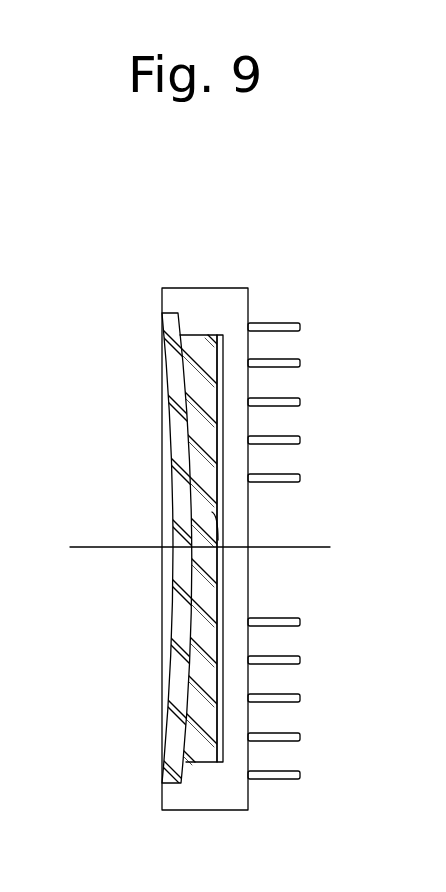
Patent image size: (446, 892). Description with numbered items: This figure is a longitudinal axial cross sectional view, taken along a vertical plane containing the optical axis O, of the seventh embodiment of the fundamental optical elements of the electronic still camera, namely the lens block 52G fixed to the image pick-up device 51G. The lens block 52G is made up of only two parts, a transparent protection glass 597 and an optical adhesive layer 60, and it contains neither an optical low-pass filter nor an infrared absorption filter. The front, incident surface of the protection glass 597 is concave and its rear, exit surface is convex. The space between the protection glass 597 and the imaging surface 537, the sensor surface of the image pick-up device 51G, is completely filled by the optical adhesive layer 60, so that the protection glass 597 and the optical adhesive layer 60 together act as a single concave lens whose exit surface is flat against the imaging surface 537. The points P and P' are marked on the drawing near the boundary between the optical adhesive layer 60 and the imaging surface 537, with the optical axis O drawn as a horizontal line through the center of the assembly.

The image pick-up device 51G is at (236, 297).
The lens block 52G is at (205, 222).
The transparent protection glass 597 is at (168, 316).
The optical adhesive layer 60 is at (202, 357).
The imaging surface 537 is at (220, 470).
The point P is at (285, 476).
The point P prime P' is at (304, 506).
The optical axis O is at (216, 547).